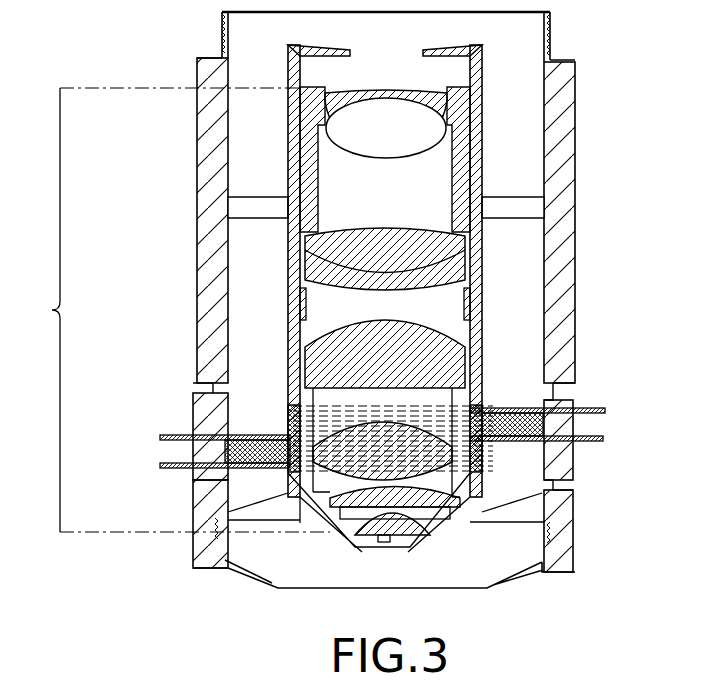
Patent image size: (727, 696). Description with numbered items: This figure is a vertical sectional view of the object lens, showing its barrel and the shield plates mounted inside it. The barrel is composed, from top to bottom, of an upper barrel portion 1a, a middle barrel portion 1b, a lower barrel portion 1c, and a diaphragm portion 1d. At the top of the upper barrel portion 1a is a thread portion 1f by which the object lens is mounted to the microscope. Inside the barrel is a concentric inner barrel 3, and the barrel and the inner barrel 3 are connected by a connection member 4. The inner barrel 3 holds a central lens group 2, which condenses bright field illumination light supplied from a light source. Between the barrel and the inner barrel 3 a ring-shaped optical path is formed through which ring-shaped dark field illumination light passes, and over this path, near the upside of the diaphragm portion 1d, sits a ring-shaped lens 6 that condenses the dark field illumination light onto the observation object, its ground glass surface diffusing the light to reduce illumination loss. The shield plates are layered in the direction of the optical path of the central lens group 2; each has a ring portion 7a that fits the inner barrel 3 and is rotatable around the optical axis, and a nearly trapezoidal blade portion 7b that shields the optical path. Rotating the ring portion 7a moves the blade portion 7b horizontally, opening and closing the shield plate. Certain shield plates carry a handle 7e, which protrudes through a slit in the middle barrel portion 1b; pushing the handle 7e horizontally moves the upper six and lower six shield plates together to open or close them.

The upper barrel portion 1a is at (575, 135).
The middle barrel portion 1b is at (573, 457).
The lower barrel portion 1c is at (573, 520).
The diaphragm portion 1d is at (572, 557).
The thread portion 1f is at (552, 40).
The central lens group 2 is at (179, 310).
The inner barrel 3 is at (482, 283).
The connection member 4 is at (530, 213).
The ring-shaped lens 6 is at (552, 495).
The ring portion 7a is at (290, 408).
The blade portion 7b is at (482, 410).
The handle 7e is at (162, 465).